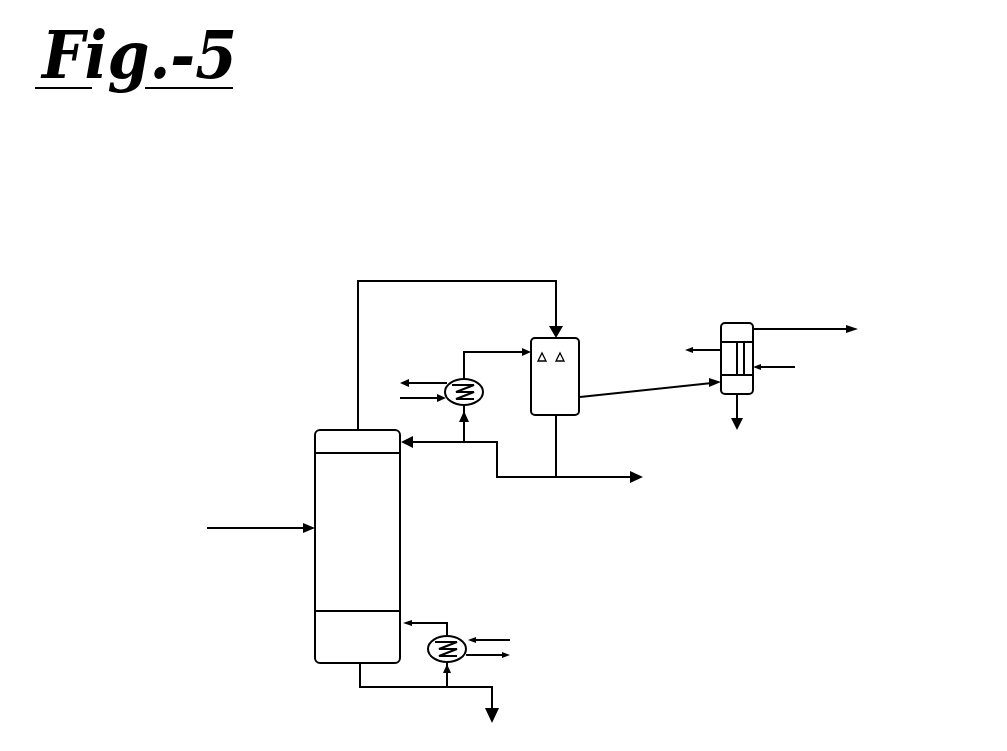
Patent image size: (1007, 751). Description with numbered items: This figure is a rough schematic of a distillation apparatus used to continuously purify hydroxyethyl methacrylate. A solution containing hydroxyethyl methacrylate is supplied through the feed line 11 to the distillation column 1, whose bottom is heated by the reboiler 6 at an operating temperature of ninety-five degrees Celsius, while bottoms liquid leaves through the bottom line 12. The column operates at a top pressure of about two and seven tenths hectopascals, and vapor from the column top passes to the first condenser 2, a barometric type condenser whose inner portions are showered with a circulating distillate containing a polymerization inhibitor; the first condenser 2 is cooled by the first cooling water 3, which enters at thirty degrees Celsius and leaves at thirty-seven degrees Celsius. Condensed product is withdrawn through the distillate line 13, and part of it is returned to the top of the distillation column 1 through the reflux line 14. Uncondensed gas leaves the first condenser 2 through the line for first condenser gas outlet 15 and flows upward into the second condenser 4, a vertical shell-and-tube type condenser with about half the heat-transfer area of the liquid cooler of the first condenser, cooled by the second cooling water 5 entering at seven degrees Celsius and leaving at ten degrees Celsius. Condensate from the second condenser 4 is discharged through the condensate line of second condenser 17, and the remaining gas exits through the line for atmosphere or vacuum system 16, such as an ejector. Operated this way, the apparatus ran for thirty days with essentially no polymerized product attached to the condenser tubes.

The distillation column 1 is at (315, 568).
The first condenser 2 is at (580, 352).
The first cooling water 3 is at (447, 383).
The second condenser 4 is at (735, 323).
The second cooling water 5 is at (795, 367).
The reboiler 6 is at (455, 630).
The feed line 11 is at (262, 528).
The bottom line 12 is at (487, 685).
The distillate line 13 is at (595, 477).
The reflux line 14 is at (459, 442).
The line for first condenser gas outlet 15 is at (658, 390).
The line for atmosphere or vacuum system 16 is at (812, 329).
The condensate line of second condenser 17 is at (743, 405).